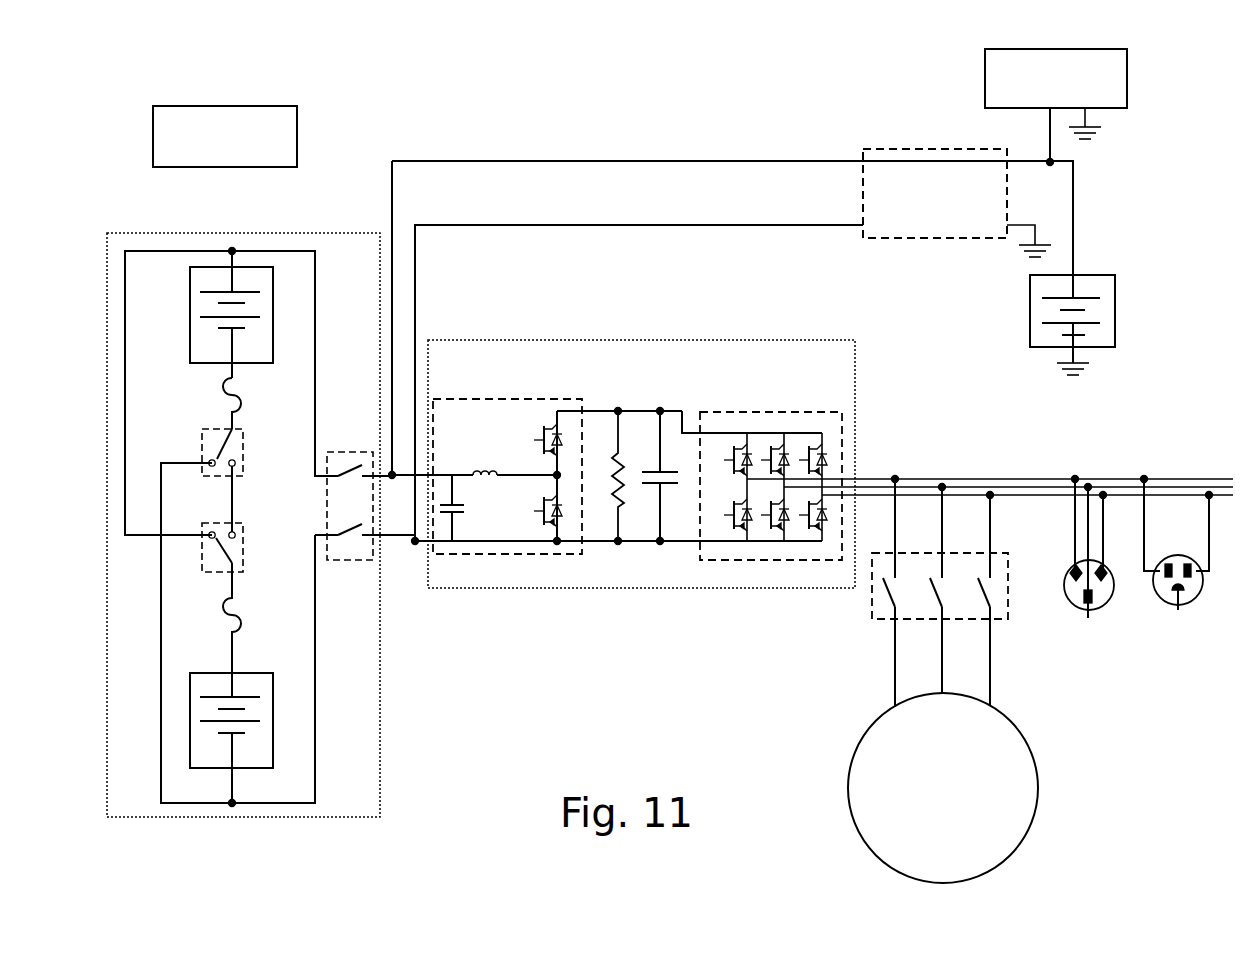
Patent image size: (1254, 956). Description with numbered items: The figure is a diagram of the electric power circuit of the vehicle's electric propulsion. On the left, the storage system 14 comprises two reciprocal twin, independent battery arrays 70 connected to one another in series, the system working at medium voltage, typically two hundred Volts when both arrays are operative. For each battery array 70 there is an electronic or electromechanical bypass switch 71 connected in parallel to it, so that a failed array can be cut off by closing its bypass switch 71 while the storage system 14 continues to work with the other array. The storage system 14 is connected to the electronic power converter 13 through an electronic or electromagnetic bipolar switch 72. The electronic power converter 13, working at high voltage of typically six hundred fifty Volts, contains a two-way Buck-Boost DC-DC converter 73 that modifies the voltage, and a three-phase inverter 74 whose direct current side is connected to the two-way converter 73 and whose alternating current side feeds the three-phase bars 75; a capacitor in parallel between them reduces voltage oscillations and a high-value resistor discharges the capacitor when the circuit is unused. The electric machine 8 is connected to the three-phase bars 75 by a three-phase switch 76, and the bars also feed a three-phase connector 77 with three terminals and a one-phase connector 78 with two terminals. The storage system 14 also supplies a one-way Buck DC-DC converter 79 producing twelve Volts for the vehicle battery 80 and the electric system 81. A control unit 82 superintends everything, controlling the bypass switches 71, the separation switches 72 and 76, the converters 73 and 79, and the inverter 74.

The electric machine 8 is at (943, 788).
The electronic power converter 13 is at (669, 660).
The storage system 14 is at (412, 691).
The battery array 70 is at (196, 330).
The bypass switch 71 is at (210, 437).
The bipolar switch 72 is at (338, 452).
The two-way DC-DC converter 73 is at (488, 413).
The three-phase inverter 74 is at (830, 420).
The three-phase bars 75 is at (958, 445).
The three-phase switch 76 is at (1005, 620).
The three-phase connector 77 is at (1079, 592).
The one-phase connector 78 is at (1168, 592).
The one-way DC-DC converter 79 is at (732, 345).
The battery 80 is at (1108, 333).
The electric system 81 is at (1056, 105).
The control unit 82 is at (225, 136).